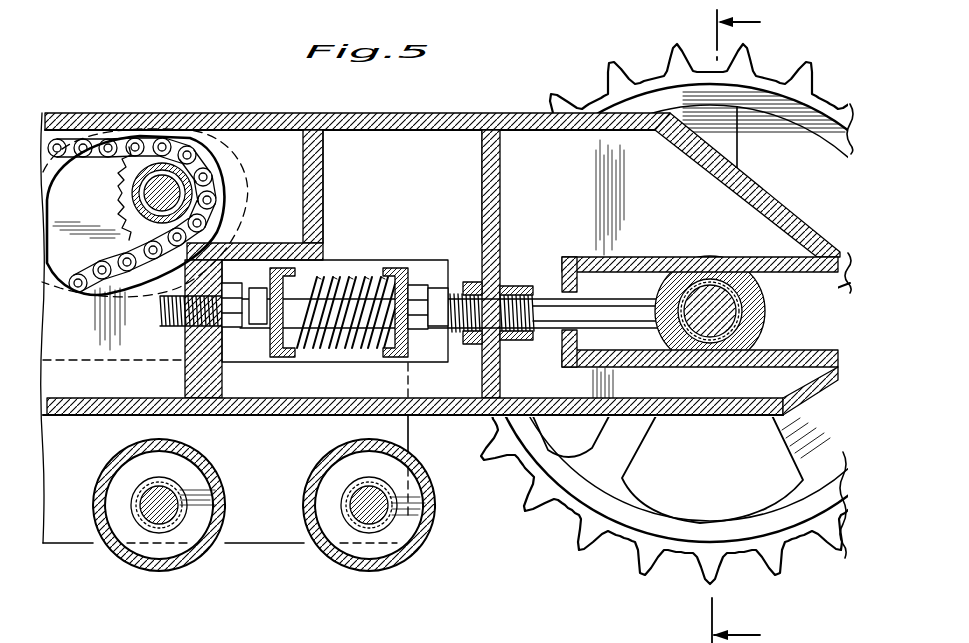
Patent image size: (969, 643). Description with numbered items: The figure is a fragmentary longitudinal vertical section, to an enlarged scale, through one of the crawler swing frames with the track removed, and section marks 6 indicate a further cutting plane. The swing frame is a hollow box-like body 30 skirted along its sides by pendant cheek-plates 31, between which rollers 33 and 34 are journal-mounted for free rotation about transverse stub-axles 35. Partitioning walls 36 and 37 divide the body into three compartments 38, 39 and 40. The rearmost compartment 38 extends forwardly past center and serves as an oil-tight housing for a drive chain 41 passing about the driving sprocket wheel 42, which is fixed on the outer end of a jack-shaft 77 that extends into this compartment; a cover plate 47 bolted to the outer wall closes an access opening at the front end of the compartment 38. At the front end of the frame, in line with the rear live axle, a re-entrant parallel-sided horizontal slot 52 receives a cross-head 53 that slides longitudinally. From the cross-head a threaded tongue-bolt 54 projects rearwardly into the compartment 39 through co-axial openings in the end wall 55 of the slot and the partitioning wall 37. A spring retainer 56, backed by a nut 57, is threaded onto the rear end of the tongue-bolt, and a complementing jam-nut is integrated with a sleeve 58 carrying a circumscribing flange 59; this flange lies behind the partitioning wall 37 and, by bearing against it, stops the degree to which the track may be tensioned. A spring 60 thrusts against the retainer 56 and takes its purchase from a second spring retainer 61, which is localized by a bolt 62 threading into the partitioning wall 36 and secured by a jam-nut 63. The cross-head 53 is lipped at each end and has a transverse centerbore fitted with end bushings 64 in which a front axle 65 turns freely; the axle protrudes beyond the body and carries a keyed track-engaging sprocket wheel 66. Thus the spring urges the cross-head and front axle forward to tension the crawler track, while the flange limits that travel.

The section line 6- 6 is at (736, 326).
The hollow box-like body 30 is at (268, 112).
The pendant cheek-plates 31 is at (293, 530).
The roller 33 is at (171, 571).
The roller 34 is at (407, 537).
The transverse stub-axles 35 is at (156, 505).
The partitioning wall 36 is at (203, 382).
The partitioning wall 37 is at (497, 183).
The rearmost compartment 38 is at (98, 382).
The compartment 39 is at (445, 147).
The compartment 40 is at (537, 147).
The drive chain 41 is at (75, 296).
The driving sprocket wheel 42 is at (123, 203).
The cover plate 47 is at (240, 208).
The re-entrant parallel-sided horizontal slot 52 is at (601, 270).
The cross-head 53 is at (692, 282).
The threaded tongue-bolt 54 is at (550, 320).
The end wall of the slot 55 is at (573, 282).
The spring retainer 56 is at (392, 270).
The nut 57 is at (412, 290).
The sleeve 58 is at (515, 286).
The circumscribing flange 59 is at (468, 356).
The spring 60 is at (350, 347).
The second spring retainer 61 is at (290, 350).
The bolt 62 is at (182, 323).
The jam-nut 63 is at (230, 336).
The end bushings 64 is at (738, 308).
The front axle 65 is at (760, 327).
The track-engaging sprocket wheel 66 is at (602, 470).
The jack-shaft 77 is at (168, 190).